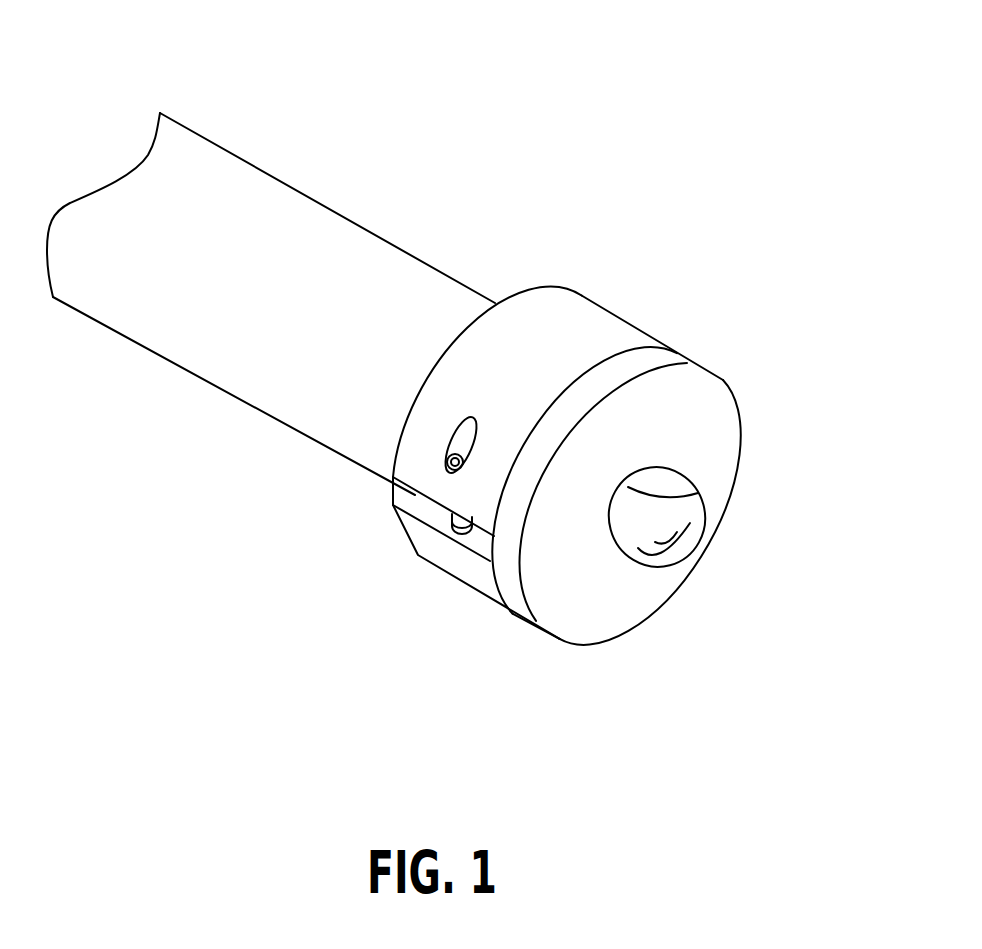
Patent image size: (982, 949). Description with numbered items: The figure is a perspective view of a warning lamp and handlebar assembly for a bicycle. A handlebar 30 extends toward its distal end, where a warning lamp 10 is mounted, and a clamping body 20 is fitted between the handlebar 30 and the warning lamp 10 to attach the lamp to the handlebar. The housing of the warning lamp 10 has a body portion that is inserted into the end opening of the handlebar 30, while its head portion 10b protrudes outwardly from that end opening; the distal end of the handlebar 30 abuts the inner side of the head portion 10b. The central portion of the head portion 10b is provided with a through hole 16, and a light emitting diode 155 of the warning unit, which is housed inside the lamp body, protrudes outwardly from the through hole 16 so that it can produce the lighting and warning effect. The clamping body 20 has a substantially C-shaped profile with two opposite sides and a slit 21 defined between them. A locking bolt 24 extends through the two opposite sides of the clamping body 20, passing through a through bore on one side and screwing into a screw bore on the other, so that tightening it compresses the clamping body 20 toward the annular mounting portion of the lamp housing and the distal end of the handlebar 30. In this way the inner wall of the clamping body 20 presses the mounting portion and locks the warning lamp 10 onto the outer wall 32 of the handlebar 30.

The warning lamp 10 is at (723, 380).
The head portion 10b is at (513, 584).
The through hole 16 is at (698, 492).
The light emitting diode 155 is at (687, 545).
The clamping body 20 is at (600, 307).
The slit 21 is at (437, 516).
The locking bolt 24 is at (443, 452).
The handlebar 30 is at (327, 204).
The outer wall 32 is at (393, 268).